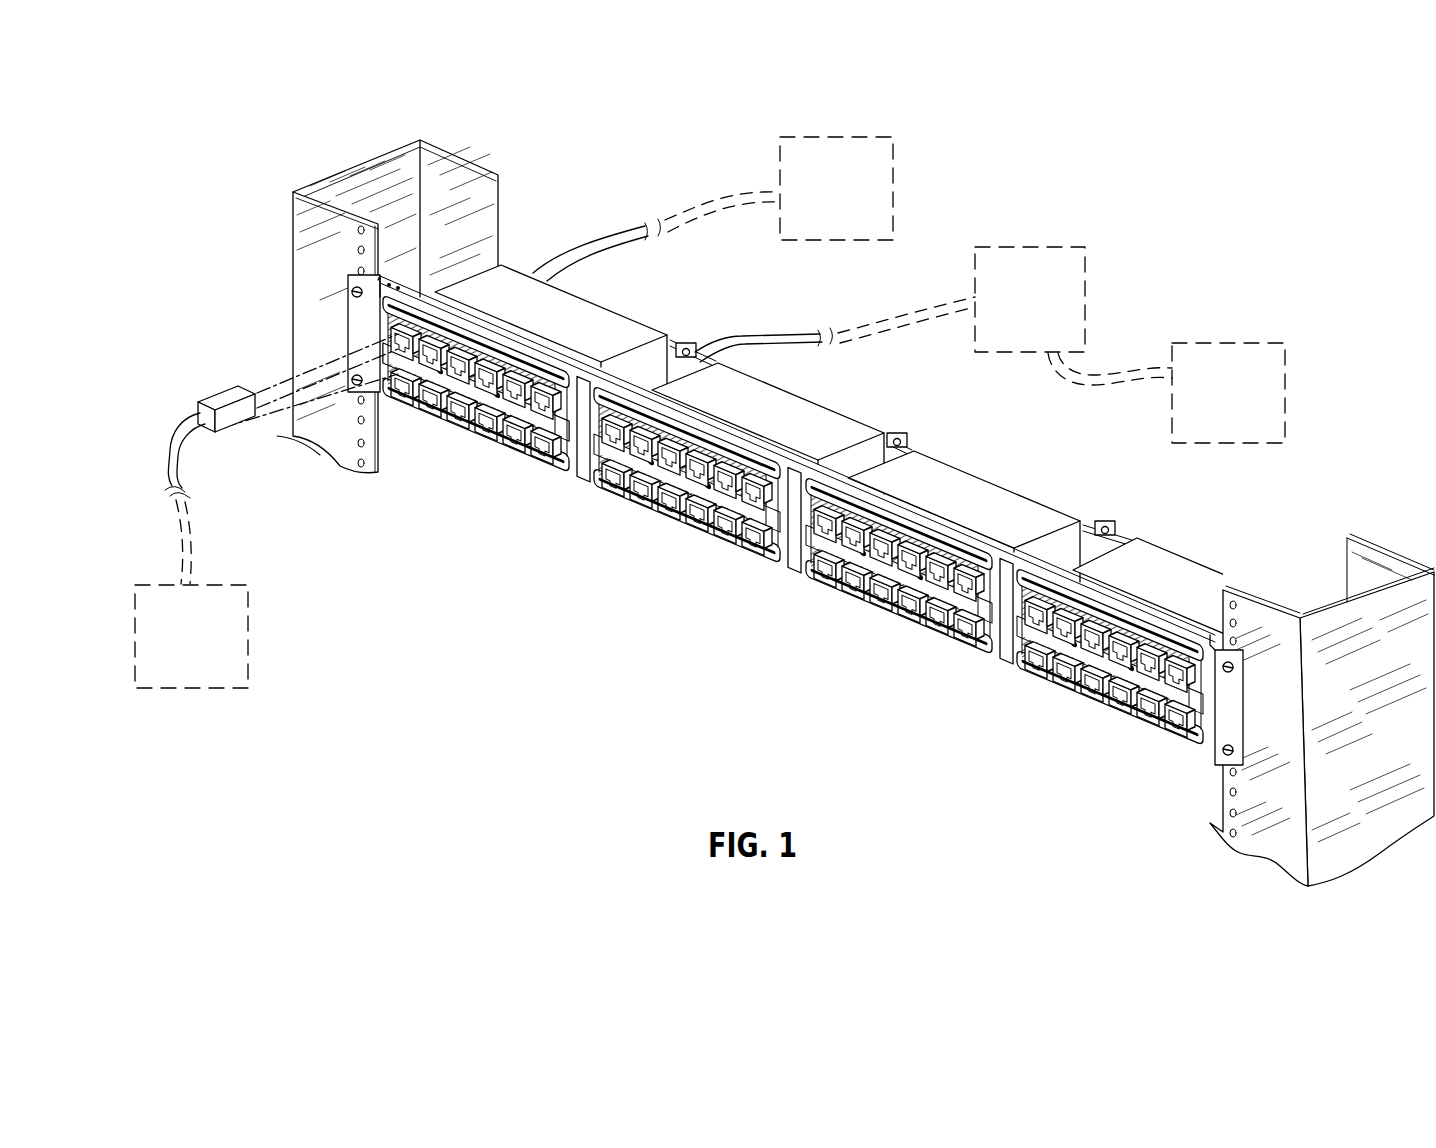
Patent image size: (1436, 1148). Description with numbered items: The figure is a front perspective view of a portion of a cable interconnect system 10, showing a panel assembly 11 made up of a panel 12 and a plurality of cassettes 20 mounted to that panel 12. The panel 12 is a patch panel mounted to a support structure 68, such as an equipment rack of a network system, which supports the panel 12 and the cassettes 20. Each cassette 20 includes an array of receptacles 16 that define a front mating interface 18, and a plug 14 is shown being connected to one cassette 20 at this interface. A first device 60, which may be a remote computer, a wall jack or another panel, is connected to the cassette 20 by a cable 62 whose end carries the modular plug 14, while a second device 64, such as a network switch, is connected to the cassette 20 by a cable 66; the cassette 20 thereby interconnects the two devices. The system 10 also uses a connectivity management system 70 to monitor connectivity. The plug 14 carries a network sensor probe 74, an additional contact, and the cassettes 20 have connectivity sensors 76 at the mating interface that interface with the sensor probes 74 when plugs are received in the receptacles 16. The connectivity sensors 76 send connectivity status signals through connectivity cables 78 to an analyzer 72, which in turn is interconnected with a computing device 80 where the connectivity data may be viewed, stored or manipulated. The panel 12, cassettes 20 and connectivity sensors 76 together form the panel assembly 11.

The cable interconnect system 10 is at (855, 497).
The panel assembly 11 is at (840, 505).
The panel 12 is at (1213, 720).
The plug 14 is at (220, 398).
The receptacles 16 is at (476, 383).
The front mating interface 18 is at (476, 392).
The cassettes 20 is at (598, 331).
The first device 60 is at (249, 614).
The cable 62 is at (180, 459).
The second device 64 is at (894, 166).
The cable 66 is at (583, 246).
The support structure 68 is at (307, 427).
The connectivity management system 70 is at (944, 290).
The analyzer 72 is at (1086, 274).
The network sensor probe 74 is at (257, 388).
The connectivity sensors 76 is at (583, 428).
The connectivity cables 78 is at (750, 331).
The computing device 80 is at (1286, 370).